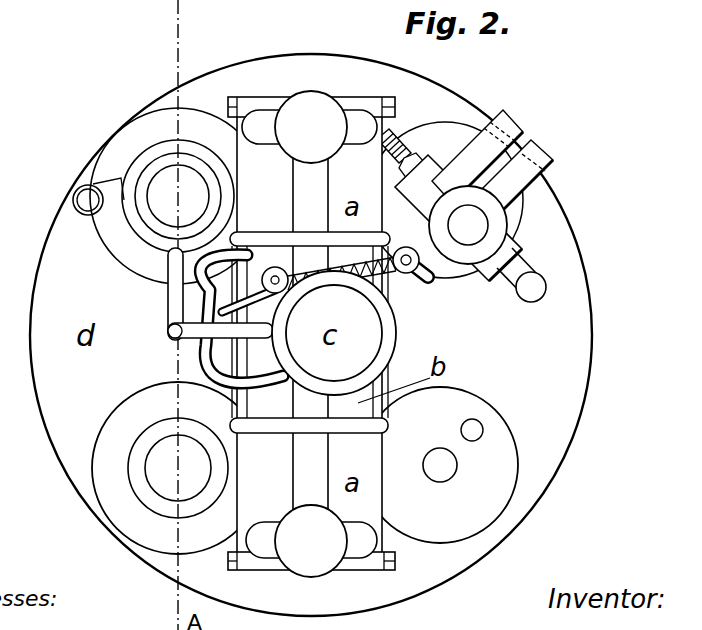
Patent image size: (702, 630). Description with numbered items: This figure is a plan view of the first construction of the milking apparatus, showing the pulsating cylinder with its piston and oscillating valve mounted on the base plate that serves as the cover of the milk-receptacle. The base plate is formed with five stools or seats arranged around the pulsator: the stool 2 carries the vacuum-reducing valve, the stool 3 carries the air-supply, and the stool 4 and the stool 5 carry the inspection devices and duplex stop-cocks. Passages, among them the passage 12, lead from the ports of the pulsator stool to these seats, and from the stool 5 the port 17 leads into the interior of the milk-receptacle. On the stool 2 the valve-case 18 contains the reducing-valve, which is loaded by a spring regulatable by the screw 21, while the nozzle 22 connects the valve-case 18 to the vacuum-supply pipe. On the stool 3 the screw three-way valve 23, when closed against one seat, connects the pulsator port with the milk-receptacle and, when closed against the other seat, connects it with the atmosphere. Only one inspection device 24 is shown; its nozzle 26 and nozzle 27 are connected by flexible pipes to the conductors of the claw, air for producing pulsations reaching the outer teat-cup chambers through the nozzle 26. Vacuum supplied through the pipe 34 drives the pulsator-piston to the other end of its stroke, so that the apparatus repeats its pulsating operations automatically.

The stool 2 is at (178, 196).
The stool 3 is at (178, 468).
The stool 4 is at (441, 266).
The stool 5 is at (503, 468).
The passage 12 is at (440, 465).
The port 17 is at (478, 421).
The valve-case 18 is at (136, 232).
The screw 21 is at (178, 196).
The nozzle 22 is at (86, 199).
The screw three-way valve 23 is at (178, 468).
The inspection device 24 is at (496, 226).
The nozzle 26 is at (498, 138).
The nozzle 27 is at (522, 167).
The pipe 34 is at (172, 336).